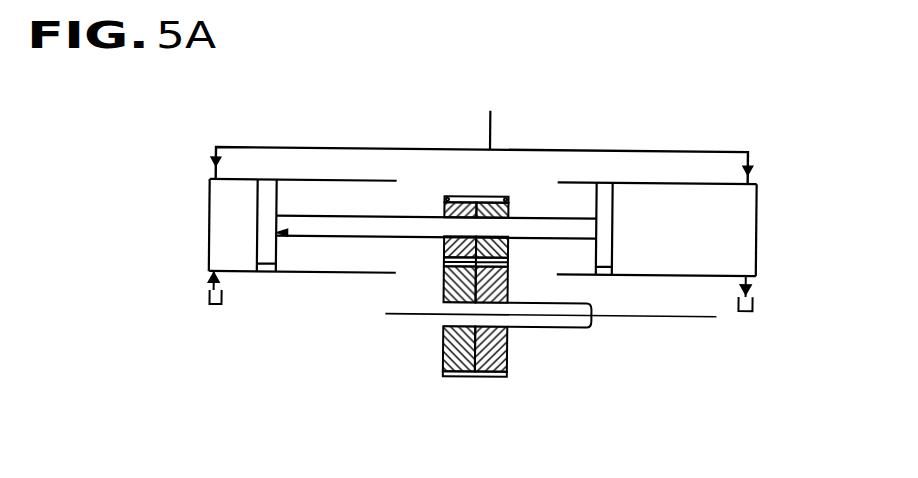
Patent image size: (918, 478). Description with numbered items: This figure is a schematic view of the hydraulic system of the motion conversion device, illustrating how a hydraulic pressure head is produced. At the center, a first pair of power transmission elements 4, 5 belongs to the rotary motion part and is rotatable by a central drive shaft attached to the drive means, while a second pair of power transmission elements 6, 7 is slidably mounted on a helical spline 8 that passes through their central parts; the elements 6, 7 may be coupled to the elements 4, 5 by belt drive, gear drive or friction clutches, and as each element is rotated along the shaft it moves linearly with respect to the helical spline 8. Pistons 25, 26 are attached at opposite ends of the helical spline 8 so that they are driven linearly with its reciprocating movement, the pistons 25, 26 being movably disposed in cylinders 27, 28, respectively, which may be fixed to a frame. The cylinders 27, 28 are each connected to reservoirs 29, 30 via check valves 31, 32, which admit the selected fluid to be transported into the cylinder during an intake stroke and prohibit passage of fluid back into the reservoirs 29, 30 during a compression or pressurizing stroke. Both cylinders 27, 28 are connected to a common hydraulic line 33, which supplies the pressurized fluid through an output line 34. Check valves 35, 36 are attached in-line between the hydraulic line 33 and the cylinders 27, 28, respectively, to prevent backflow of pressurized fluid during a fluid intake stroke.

The power transmission element 4 is at (509, 378).
The power transmission element 5 is at (445, 378).
The power transmission element 6 is at (505, 195).
The power transmission element 7 is at (450, 195).
The helical spline 8 is at (375, 237).
The piston 25 is at (605, 276).
The piston 26 is at (268, 272).
The cylinder 27 is at (758, 218).
The cylinder 28 is at (210, 233).
The reservoir 29 is at (752, 313).
The reservoir 30 is at (216, 306).
The check valve 31 is at (753, 290).
The check valve 32 is at (213, 282).
The common hydraulic line 33 is at (301, 153).
The output line 34 is at (500, 127).
The check valve 35 is at (750, 164).
The check valve 36 is at (214, 158).